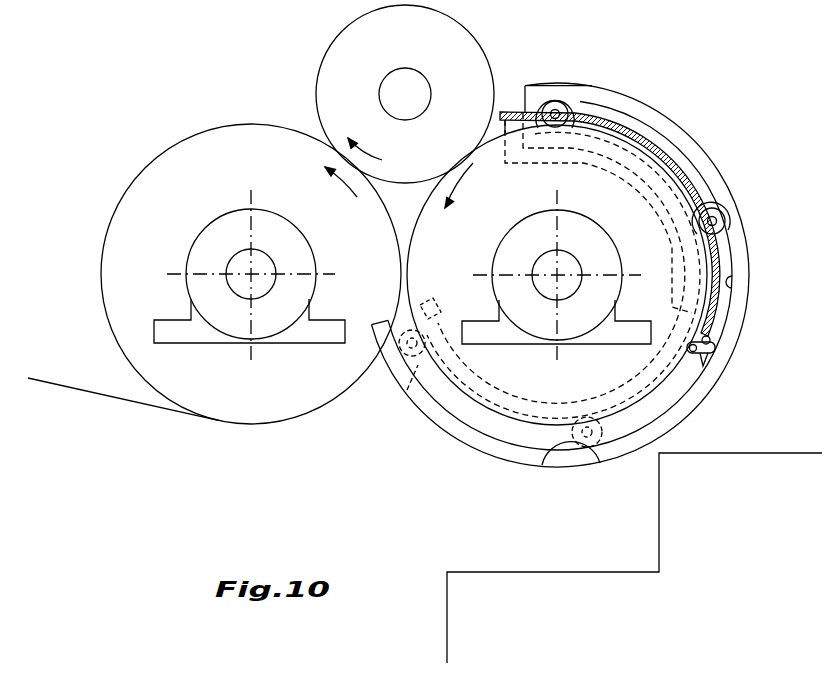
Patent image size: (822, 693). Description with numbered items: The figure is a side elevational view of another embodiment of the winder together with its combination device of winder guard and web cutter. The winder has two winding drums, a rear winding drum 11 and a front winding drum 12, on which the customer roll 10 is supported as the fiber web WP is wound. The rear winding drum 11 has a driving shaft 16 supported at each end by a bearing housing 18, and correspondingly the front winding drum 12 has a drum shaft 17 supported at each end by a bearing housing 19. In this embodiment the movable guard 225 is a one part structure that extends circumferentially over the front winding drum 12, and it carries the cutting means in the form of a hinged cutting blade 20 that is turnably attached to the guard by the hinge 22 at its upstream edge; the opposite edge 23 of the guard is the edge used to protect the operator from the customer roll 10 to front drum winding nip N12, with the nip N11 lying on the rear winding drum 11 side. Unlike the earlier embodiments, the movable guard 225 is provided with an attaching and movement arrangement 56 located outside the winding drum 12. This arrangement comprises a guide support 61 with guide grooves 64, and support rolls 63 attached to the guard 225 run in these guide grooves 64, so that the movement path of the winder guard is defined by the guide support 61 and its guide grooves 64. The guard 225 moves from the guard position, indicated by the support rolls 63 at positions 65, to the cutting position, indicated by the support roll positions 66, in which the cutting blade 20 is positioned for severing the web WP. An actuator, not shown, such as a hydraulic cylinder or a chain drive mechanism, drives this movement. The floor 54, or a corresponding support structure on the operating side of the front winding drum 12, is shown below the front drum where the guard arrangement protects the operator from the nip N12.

The customer roll 10 is at (465, 45).
The rear winding drum 11 is at (172, 158).
The front winding drum 12 is at (457, 387).
The driving shaft 16 is at (238, 252).
The drum shaft 17 is at (545, 253).
The bearing housing 18 is at (287, 236).
The bearing housing 19 is at (594, 236).
The cutting blade 20 is at (712, 361).
The hinge 22 is at (716, 349).
The edge 23 is at (500, 110).
The floor 54 is at (723, 454).
The attaching and movement arrangement 56 is at (560, 286).
The guide support 61 is at (665, 115).
The support rolls 63 is at (541, 125).
The guide grooves 64 is at (737, 284).
The guard position 65 is at (577, 100).
The cutting position 66 is at (407, 390).
The movable guard 225 is at (674, 157).
The nip N11 is at (334, 124).
The winding nip N12 is at (465, 157).
The fiber web WP is at (120, 400).